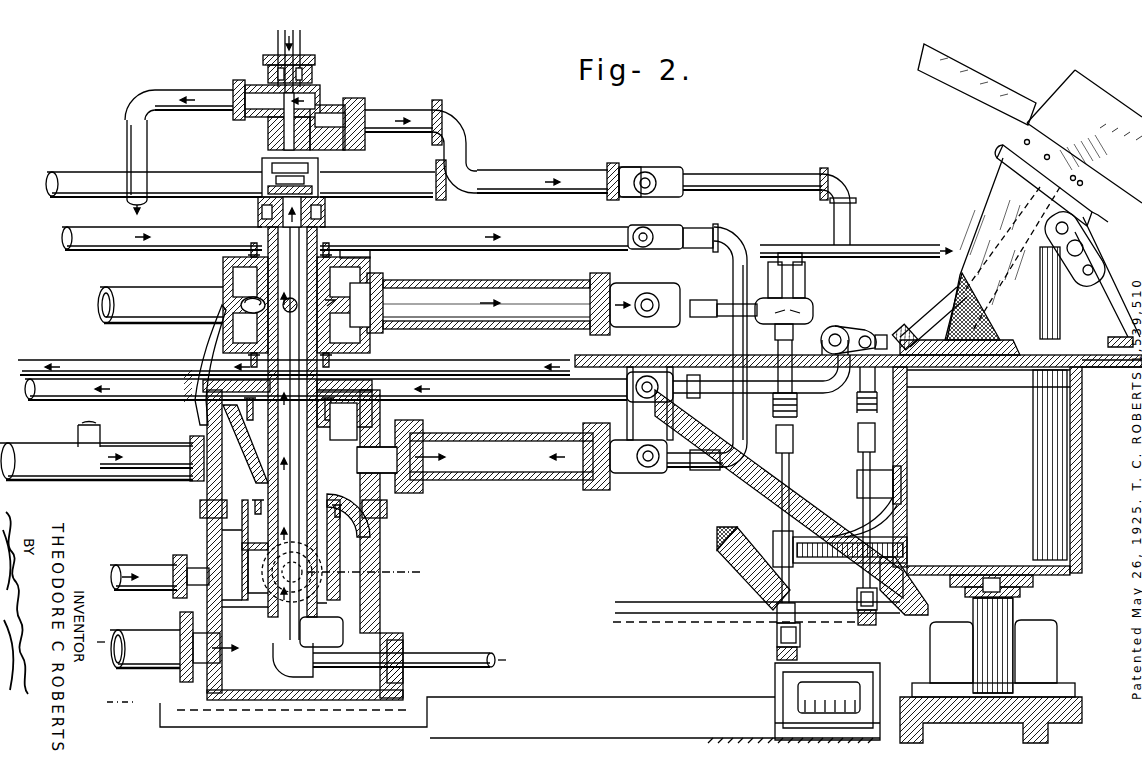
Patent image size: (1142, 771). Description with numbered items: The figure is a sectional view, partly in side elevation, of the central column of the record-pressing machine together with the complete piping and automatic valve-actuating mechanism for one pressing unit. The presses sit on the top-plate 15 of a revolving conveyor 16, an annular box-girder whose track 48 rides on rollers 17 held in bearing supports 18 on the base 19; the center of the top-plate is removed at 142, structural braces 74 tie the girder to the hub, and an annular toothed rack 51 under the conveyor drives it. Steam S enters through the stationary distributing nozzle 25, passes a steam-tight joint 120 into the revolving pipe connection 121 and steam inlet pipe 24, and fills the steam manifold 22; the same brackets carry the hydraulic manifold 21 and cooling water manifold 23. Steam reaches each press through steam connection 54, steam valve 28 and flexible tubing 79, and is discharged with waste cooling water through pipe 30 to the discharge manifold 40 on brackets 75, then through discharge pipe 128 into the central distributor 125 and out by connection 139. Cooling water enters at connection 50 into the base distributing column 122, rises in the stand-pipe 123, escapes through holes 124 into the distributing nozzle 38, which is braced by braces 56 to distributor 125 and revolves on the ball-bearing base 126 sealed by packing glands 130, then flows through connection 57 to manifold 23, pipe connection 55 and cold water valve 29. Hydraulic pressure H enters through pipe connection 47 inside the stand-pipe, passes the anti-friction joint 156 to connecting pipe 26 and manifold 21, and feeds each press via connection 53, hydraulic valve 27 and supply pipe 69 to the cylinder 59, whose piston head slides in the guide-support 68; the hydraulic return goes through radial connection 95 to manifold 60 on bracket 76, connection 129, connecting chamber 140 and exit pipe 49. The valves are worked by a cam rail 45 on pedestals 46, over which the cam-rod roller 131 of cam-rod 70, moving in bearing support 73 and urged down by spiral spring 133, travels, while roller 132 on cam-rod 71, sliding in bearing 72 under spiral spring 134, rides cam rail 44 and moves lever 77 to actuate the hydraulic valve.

The top-plate 15 is at (650, 358).
The conveyor 16 is at (1083, 468).
The rollers 17 is at (993, 645).
The bearing supports 18 is at (991, 681).
The base 19 is at (503, 672).
The hydraulic manifold 21 is at (656, 172).
The steam header or manifold 22 is at (525, 232).
The cooling water manifold 23 is at (630, 288).
The steam inlet pipe 24 is at (150, 158).
The steam distributing nozzle 25 is at (303, 40).
The connecting pipe 26 is at (604, 170).
The hydraulic valve 27 is at (820, 346).
The steam valve 28 is at (805, 297).
The cold water valve 29 is at (760, 300).
The discharge pipe 30 is at (700, 470).
The distributing nozzle 38 is at (372, 256).
The discharge manifold 40 is at (630, 480).
The cam rail 44 is at (878, 620).
The cam rail 45 is at (777, 653).
The pedestals 46 is at (783, 684).
The hydraulic pipe connection 47 is at (430, 650).
The track 48 is at (1033, 588).
The exit pipe 49 is at (135, 565).
The cooling water connection 50 is at (133, 642).
The annular toothed rack 51 is at (903, 615).
The radial hydraulic connection 53 is at (846, 314).
The steam connection 54 is at (698, 250).
The cooling water pipe connection 55 is at (700, 318).
The braces 56 is at (360, 384).
The connection 57 is at (405, 322).
The cylinder 59 is at (1060, 100).
The circular discharge manifold 60 is at (480, 395).
The guide-support 68 is at (948, 62).
The supply pipe 69 is at (935, 320).
The cam-rod 70 is at (790, 462).
The cam-rod 71 is at (862, 460).
The bearing 72 is at (862, 484).
The bearing support 73 is at (773, 540).
The stiffeners or structural braces 74 is at (728, 525).
The supporting brackets 75 is at (626, 410).
The bracket 76 is at (648, 400).
The lever 77 is at (870, 335).
The flexible tubing 79 is at (835, 262).
The radial discharge connection 95 is at (830, 395).
The steam-tight joint 120 is at (316, 57).
The pipe connection 121 is at (314, 83).
The base distributing column 122 is at (200, 692).
The stand-pipe 123 is at (310, 640).
The escape holes 124 is at (290, 298).
The central distributor 125 is at (395, 510).
The ball-bearing base 126 is at (385, 518).
The discharge pipe 128 is at (498, 478).
The connection 129 is at (140, 445).
The packing glands 130 is at (340, 518).
The cam-rod roller 131 is at (777, 637).
The roller 132 is at (860, 610).
The spiral spring 133 is at (775, 408).
The spiral spring 134 is at (860, 410).
The connection 139 is at (380, 575).
The connecting chamber 140 is at (245, 478).
The removed center 142 is at (580, 356).
The water-tight anti-friction joint 156 is at (310, 160).